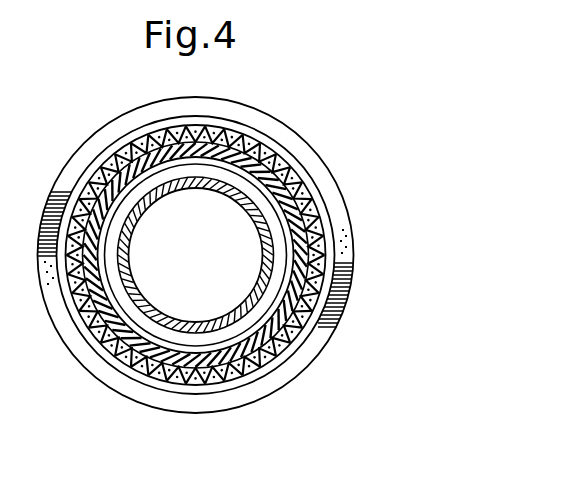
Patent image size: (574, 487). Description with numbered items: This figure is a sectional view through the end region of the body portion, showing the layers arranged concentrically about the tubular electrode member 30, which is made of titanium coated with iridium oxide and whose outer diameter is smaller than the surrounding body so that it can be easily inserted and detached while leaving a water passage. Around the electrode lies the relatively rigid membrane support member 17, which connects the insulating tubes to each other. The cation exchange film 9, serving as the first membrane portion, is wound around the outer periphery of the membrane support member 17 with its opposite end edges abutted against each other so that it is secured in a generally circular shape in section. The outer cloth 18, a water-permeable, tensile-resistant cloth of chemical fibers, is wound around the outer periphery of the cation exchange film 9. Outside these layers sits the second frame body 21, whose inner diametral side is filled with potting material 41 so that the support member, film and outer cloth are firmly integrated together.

The cation exchange film 9 is at (280, 353).
The membrane support member 17 is at (153, 380).
The outer cloth 18 is at (290, 186).
The second frame body 21 is at (352, 218).
The electrode member 30 is at (257, 308).
The potting material 41 is at (333, 278).